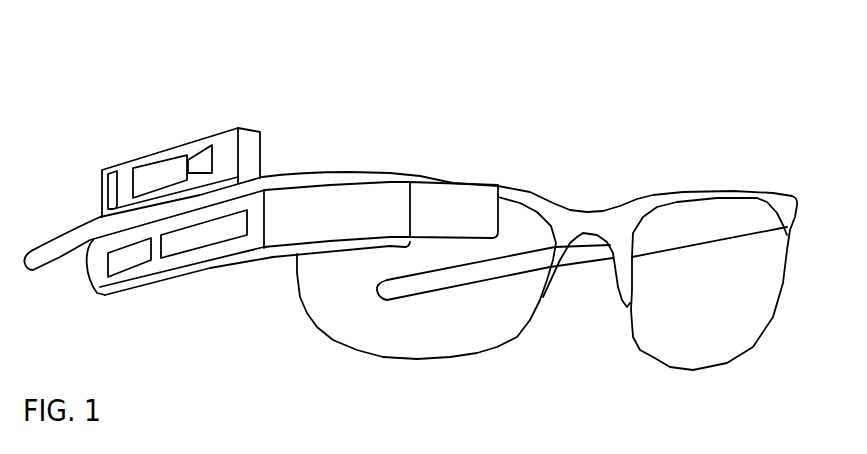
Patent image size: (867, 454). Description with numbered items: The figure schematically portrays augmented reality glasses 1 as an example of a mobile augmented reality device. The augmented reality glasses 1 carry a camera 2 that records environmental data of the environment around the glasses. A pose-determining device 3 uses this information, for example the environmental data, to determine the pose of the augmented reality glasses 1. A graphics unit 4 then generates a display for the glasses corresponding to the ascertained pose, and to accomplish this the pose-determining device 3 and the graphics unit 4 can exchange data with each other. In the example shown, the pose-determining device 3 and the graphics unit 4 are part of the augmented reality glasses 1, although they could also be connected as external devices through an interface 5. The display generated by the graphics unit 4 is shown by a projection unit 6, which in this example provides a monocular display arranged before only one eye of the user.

The augmented reality glasses 1 is at (557, 133).
The camera 2 is at (208, 137).
The pose-determining device 3 is at (130, 270).
The graphics unit 4 is at (193, 252).
The interface 5 is at (101, 188).
The projection unit 6 is at (453, 185).